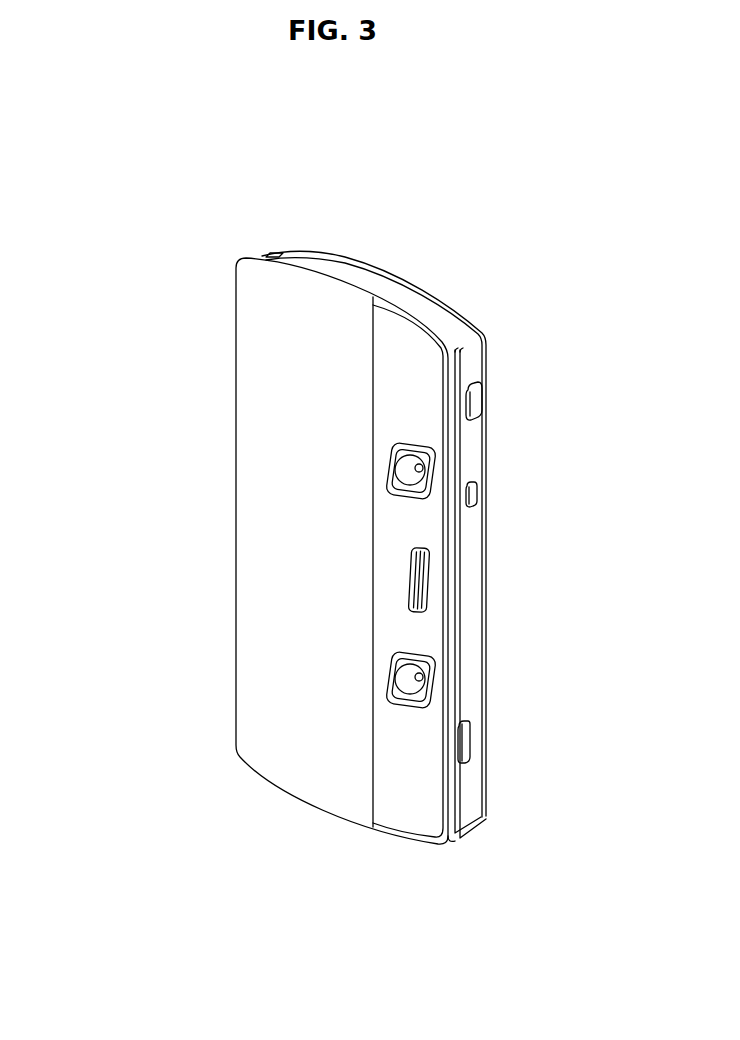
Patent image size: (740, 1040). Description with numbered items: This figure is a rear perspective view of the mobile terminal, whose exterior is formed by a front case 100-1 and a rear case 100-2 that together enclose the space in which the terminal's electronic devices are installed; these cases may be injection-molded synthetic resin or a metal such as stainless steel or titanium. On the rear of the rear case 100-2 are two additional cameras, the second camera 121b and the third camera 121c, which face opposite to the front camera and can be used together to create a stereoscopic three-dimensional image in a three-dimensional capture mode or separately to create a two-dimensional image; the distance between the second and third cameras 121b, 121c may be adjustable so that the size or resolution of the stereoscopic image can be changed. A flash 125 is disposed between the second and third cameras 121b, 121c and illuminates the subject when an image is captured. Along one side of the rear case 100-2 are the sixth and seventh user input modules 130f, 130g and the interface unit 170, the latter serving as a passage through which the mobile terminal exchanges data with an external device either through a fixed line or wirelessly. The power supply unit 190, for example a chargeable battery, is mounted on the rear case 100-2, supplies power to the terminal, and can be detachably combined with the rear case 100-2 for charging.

The front case 100-1 is at (280, 250).
The rear case 100-2 is at (258, 256).
The second camera 121b is at (410, 473).
The third camera 121c is at (400, 678).
The flash 125 is at (418, 582).
The sixth user input module 130f is at (475, 410).
The seventh user input module 130g is at (473, 495).
The interface unit 170 is at (465, 745).
The power supply unit 190 is at (258, 603).